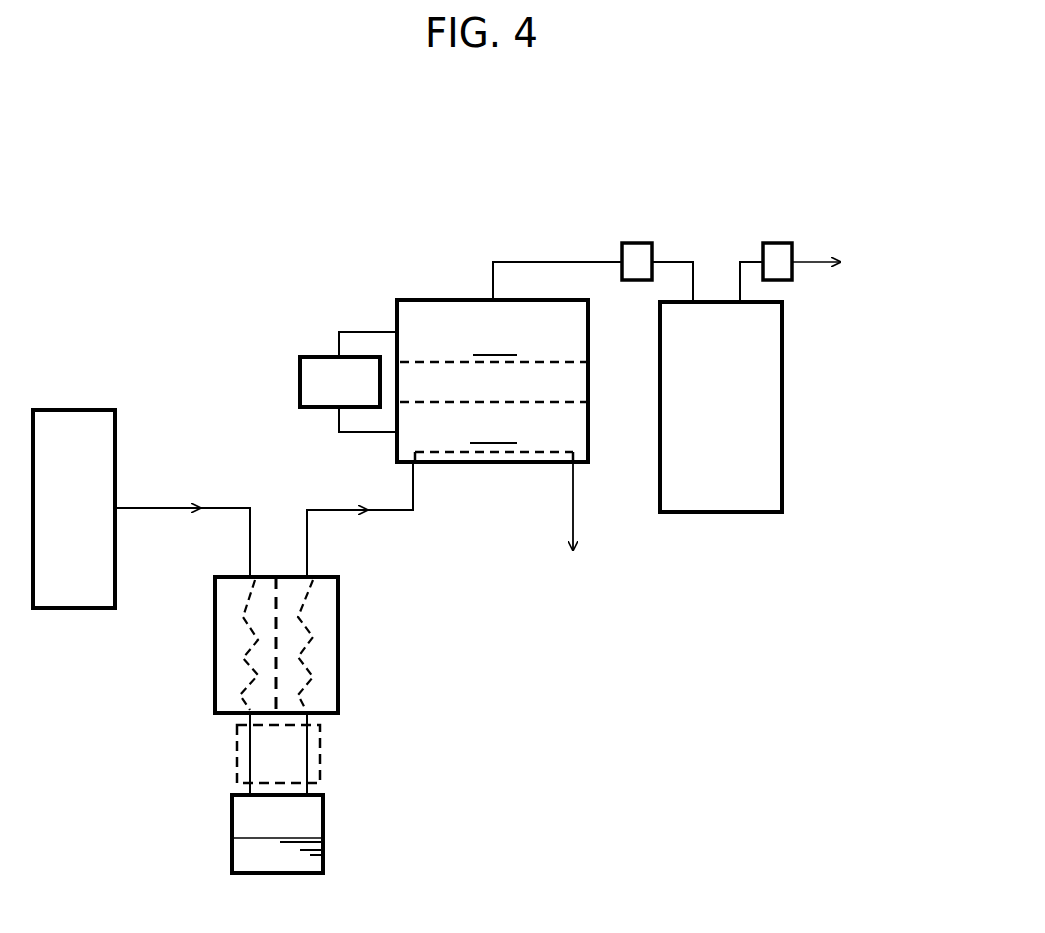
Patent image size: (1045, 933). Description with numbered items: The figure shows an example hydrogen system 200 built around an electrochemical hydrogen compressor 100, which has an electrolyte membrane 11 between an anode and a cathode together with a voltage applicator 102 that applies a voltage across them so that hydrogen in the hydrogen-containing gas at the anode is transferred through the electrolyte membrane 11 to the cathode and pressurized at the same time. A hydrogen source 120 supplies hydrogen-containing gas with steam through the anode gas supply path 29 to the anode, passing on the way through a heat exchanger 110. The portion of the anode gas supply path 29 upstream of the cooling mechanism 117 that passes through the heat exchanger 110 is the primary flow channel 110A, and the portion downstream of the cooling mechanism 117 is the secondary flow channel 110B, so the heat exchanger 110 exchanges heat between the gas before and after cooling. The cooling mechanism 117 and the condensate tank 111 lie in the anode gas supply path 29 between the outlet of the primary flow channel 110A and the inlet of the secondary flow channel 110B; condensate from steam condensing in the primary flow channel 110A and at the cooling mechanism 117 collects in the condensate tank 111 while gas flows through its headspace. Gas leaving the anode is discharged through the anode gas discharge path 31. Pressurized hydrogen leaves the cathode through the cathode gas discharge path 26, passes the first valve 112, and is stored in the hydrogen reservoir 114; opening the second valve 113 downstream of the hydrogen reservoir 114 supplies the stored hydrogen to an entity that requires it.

The hydrogen system 200 is at (255, 167).
The electrochemical hydrogen compressor 100 is at (372, 290).
The electrolyte membrane 11 is at (512, 398).
The voltage applicator 102 is at (369, 397).
The cathode gas discharge path 26 is at (567, 260).
The first valve 112 is at (633, 242).
The second valve 113 is at (775, 242).
The hydrogen reservoir 114 is at (748, 425).
The anode gas discharge path 31 is at (573, 508).
The hydrogen source 120 is at (107, 527).
The anode gas supply path 29 is at (163, 510).
The heat exchanger 110 is at (340, 642).
The primary flow channel 110A is at (253, 683).
The secondary flow channel 110B is at (310, 687).
The cooling mechanism 117 is at (233, 750).
The condensate tank 111 is at (325, 817).